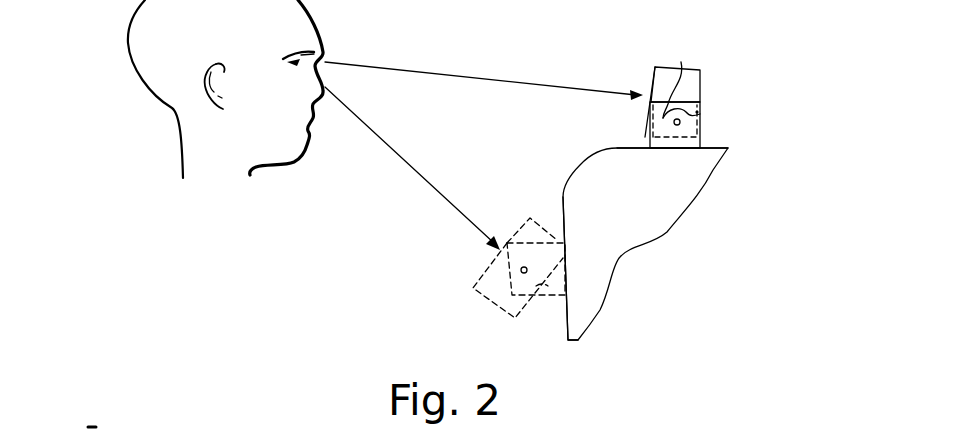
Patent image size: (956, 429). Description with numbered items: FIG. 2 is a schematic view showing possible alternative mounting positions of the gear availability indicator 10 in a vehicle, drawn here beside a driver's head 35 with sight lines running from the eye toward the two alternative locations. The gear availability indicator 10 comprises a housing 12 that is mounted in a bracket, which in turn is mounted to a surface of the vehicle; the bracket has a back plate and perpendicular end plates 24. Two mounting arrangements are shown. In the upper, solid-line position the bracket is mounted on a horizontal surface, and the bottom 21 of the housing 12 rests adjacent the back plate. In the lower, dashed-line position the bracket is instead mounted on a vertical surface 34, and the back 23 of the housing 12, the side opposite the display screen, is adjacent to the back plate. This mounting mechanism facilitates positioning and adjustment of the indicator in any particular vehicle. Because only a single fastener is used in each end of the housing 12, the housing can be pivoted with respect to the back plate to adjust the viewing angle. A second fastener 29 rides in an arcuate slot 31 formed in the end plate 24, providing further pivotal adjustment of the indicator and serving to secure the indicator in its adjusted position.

The gear availability indicator 10 is at (738, 90).
The housing 12 is at (708, 70).
The bottom of the housing 21 is at (665, 150).
The back of the housing 23 is at (572, 282).
The end plate 24 is at (655, 125).
The second fastener 29 is at (678, 78).
The arcuate slot 31 is at (700, 122).
The vertical surface 34 is at (570, 322).
The head of user 35 is at (128, 43).